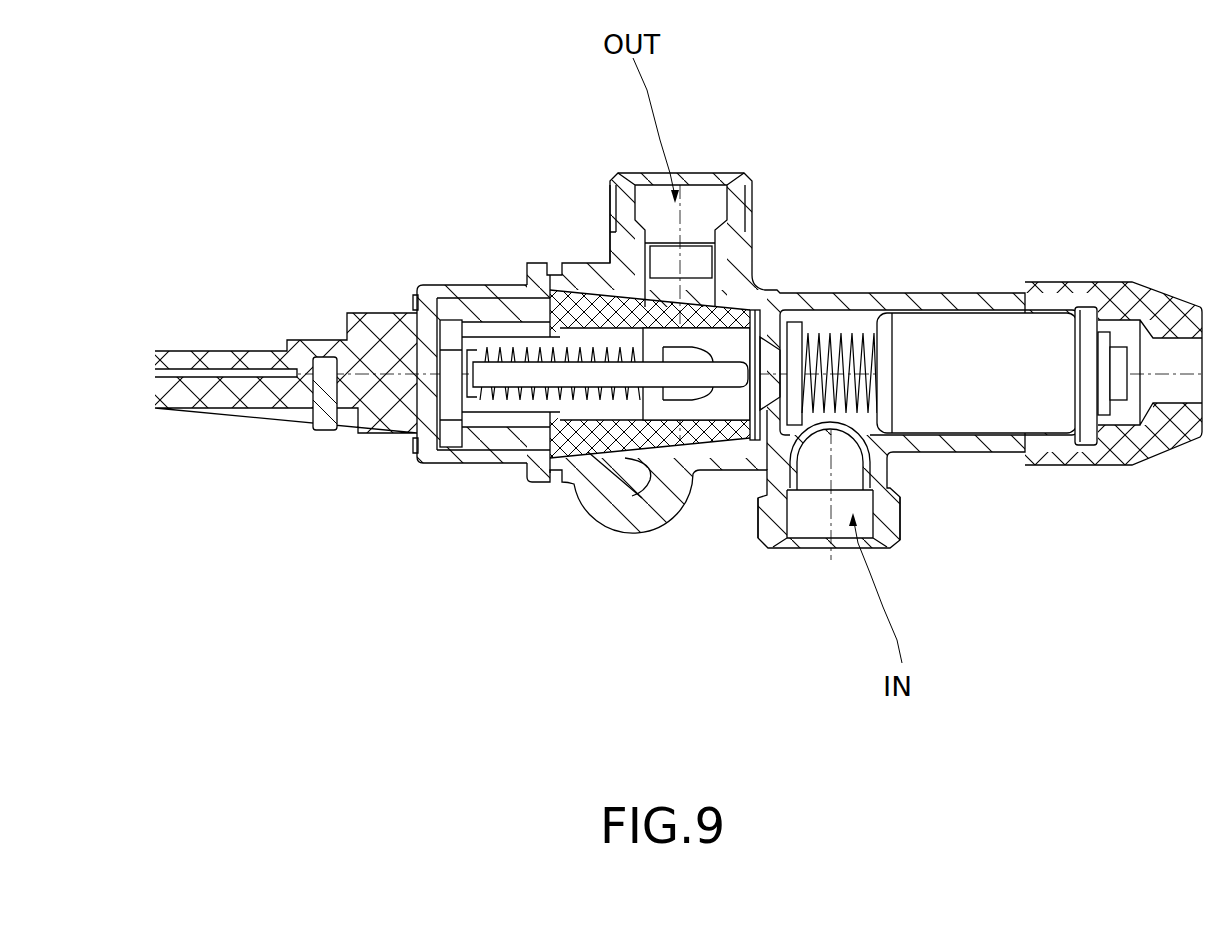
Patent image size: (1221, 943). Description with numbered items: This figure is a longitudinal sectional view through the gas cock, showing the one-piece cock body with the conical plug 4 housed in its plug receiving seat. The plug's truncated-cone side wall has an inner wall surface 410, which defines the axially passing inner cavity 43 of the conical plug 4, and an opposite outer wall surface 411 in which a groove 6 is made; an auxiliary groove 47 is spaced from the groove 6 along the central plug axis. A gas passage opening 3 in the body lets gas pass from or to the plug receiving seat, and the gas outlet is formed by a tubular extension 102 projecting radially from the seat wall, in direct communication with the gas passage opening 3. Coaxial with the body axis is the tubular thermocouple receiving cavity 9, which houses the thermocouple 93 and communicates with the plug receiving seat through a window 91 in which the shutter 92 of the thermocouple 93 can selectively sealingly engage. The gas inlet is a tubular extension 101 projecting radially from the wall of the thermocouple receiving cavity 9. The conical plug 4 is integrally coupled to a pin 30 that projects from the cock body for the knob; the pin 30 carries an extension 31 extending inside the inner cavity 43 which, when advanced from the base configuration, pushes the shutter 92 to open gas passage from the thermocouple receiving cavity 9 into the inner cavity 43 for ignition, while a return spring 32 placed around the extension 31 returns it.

The tubular extension 102 is at (751, 303).
The gas passage opening 3 is at (687, 298).
The pin 30 is at (276, 446).
The extension 31 is at (610, 502).
The return spring 32 is at (421, 473).
The conical plug 4 is at (488, 448).
The inner wall surface 410 is at (294, 330).
The outer wall surface 411 is at (536, 203).
The auxiliary groove 47 is at (468, 276).
The inner cavity 43 is at (753, 499).
The groove 6 is at (667, 433).
The thermocouple receiving cavity 9 is at (968, 292).
The window 91 is at (811, 251).
The shutter 92 is at (841, 282).
The thermocouple 93 is at (998, 348).
The tubular extension 101 is at (924, 553).